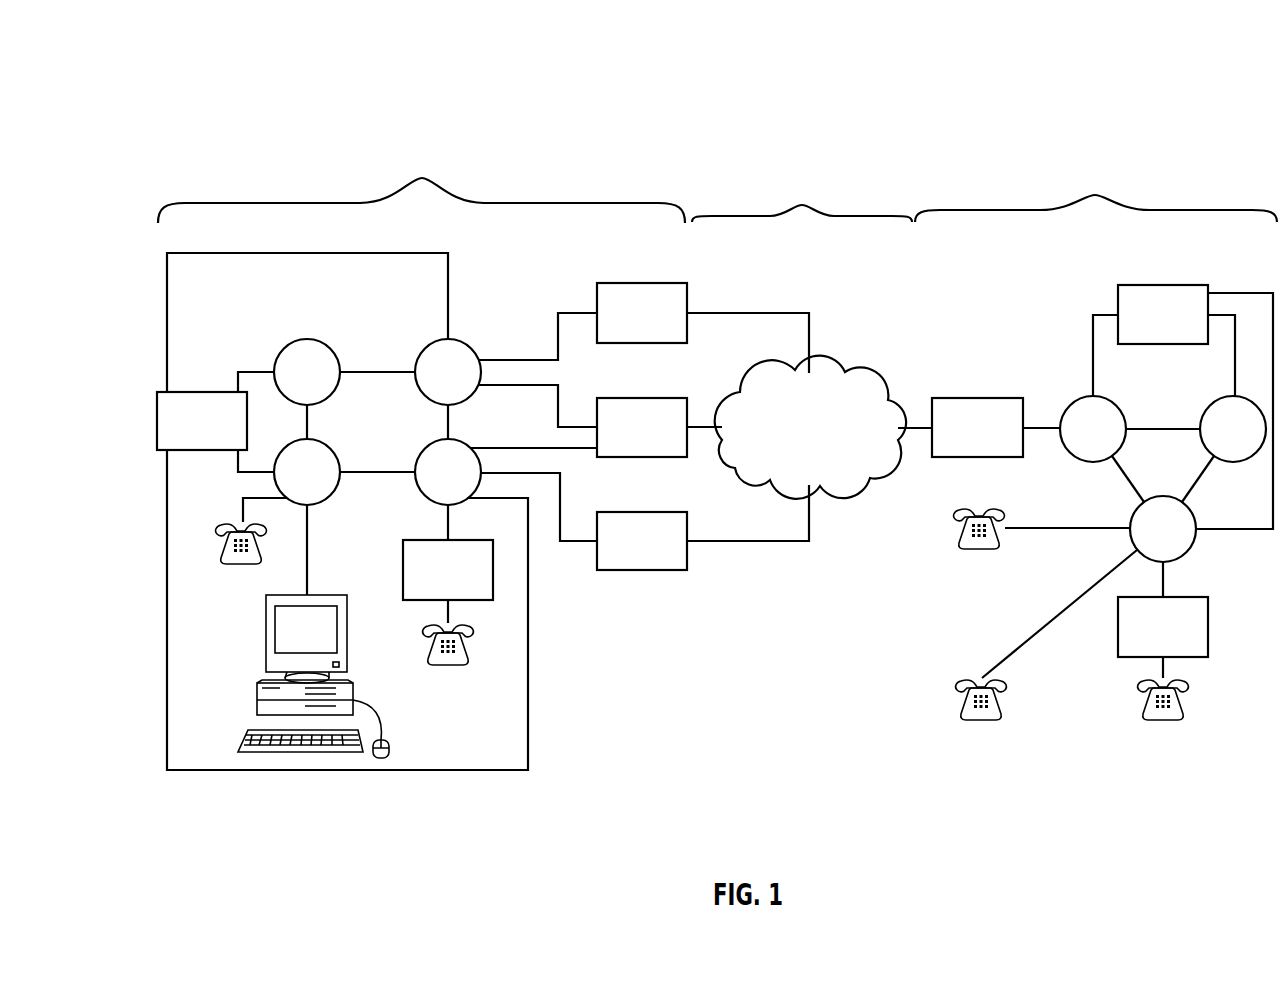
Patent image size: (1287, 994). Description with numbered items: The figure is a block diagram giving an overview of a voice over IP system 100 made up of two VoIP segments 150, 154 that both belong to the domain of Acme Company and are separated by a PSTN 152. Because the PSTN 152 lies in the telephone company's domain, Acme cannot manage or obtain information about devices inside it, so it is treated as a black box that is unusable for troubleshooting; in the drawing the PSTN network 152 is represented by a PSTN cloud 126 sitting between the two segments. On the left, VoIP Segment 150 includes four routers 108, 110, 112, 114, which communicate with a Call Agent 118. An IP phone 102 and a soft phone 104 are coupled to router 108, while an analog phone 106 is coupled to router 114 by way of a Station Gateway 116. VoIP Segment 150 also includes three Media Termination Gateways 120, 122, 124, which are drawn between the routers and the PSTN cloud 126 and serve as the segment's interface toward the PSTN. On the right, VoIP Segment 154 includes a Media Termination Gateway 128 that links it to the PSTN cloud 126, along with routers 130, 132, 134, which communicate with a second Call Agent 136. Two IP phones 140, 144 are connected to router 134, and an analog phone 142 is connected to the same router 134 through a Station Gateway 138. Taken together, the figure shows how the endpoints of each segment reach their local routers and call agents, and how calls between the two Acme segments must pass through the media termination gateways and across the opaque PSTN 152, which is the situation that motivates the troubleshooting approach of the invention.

The VoIP system 100 is at (178, 94).
The IP phone 102 is at (243, 563).
The soft phone 104 is at (257, 700).
The analog phone 106 is at (444, 667).
The router 108 is at (330, 447).
The router 110 is at (330, 347).
The router 112 is at (472, 347).
The router 114 is at (462, 447).
The Station Gateway 116 is at (403, 570).
The Call Agent 118 is at (157, 414).
The Media Termination Gateway 120 is at (642, 283).
The Media Termination Gateway 122 is at (642, 398).
The Media Termination Gateway 124 is at (642, 512).
The PSTN cloud 126 is at (765, 376).
The Media Termination Gateway 128 is at (978, 398).
The router 130 is at (1080, 398).
The router 132 is at (1222, 398).
The router 134 is at (1131, 516).
The Call Agent 136 is at (1163, 285).
The Station Gateway 138 is at (1118, 629).
The IP phone 140 is at (985, 550).
The analog phone 142 is at (1163, 723).
The IP phone 144 is at (975, 723).
The VoIP Segment 150 is at (421, 183).
The PSTN 152 is at (802, 195).
The VoIP Segment 154 is at (1096, 190).